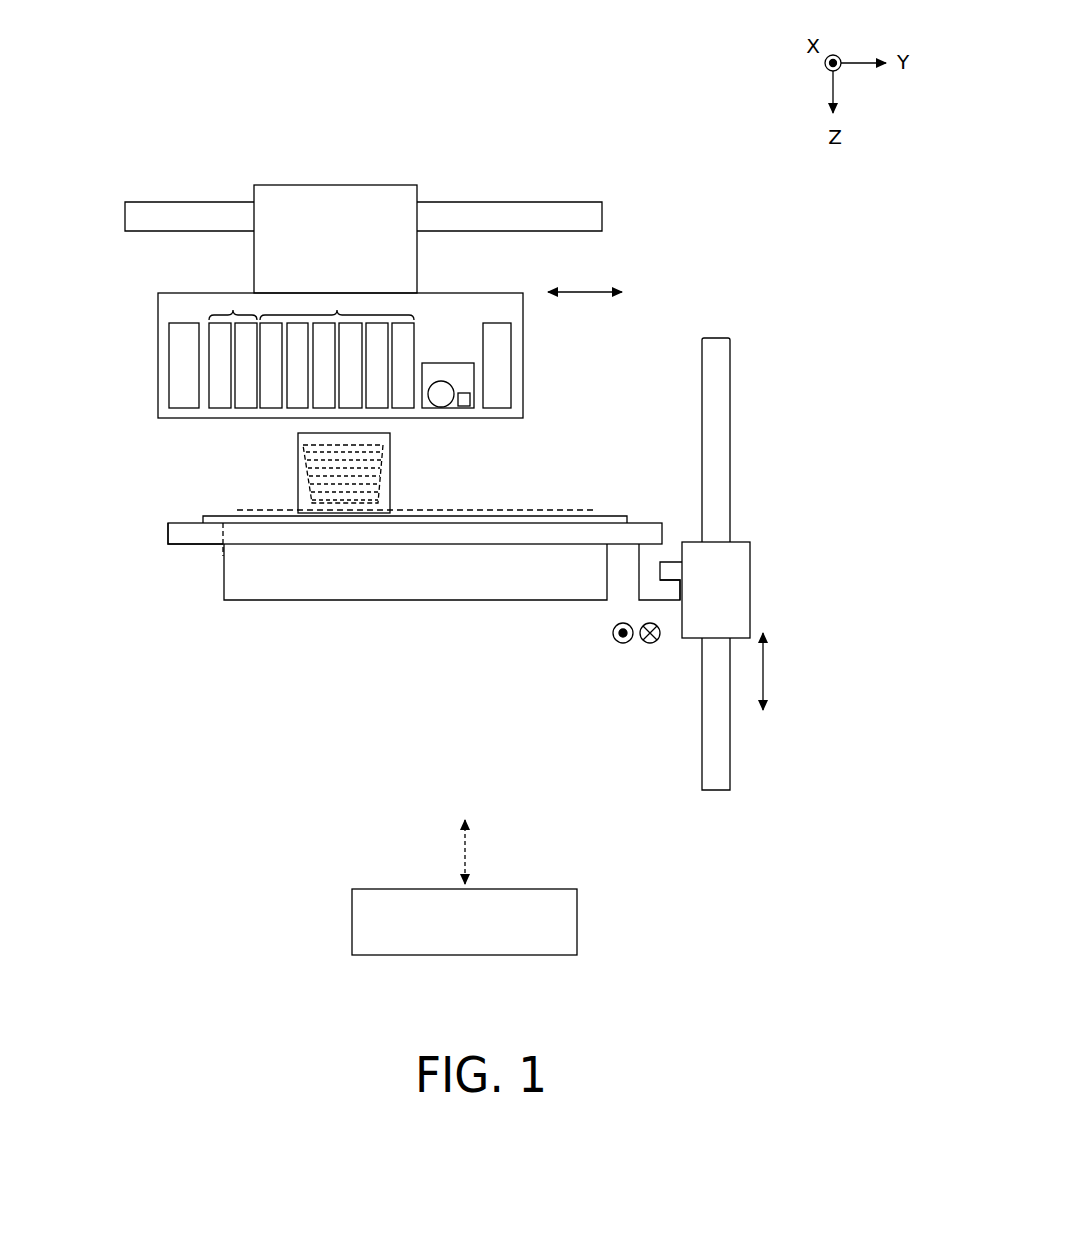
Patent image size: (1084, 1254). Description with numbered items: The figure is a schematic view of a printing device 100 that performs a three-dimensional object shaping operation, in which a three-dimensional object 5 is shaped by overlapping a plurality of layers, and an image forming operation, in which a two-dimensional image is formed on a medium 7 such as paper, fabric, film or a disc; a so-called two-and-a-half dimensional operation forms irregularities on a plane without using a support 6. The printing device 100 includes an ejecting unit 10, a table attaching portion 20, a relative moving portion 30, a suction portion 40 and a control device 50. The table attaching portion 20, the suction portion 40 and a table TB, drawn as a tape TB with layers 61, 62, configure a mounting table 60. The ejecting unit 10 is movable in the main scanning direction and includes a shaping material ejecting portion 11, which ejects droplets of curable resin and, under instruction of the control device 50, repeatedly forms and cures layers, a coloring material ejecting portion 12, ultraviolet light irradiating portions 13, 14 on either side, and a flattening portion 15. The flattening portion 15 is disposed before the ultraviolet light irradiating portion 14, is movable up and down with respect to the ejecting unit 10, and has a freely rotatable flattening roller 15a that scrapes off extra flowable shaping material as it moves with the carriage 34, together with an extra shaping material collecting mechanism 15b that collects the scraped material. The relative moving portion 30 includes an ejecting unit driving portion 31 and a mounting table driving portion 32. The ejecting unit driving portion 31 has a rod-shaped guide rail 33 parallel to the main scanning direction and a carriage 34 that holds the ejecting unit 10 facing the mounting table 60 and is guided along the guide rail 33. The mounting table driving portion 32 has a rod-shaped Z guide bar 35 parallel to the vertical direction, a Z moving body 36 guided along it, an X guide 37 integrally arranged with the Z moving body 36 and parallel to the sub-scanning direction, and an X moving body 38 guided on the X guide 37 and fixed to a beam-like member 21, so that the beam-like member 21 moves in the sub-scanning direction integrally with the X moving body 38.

The printing device 100 is at (678, 58).
The ejecting unit 10 is at (155, 313).
The shaping material ejecting portion 11 is at (233, 310).
The coloring material ejecting portion 12 is at (337, 310).
The ultraviolet light irradiating portion 13 is at (169, 365).
The ultraviolet light irradiating portion 14 is at (511, 372).
The flattening portion 15 is at (449, 360).
The flattening roller 15a is at (441, 408).
The extra shaping material collecting mechanism 15b is at (465, 407).
The three-dimensional object 5 is at (300, 463).
The support 6 is at (386, 505).
The medium 7 is at (513, 515).
The table attaching portion 20 is at (639, 516).
The beam-like member 21 is at (176, 540).
The relative moving portion 30 is at (655, 163).
The ejecting unit driving portion 31 is at (612, 215).
The mounting table driving portion 32 is at (717, 334).
The guide rail 33 is at (531, 201).
The carriage 34 is at (418, 262).
The Z guide bar 35 is at (726, 423).
The Z moving body 36 is at (742, 580).
The X guide 37 is at (672, 578).
The X moving body 38 is at (666, 546).
The suction portion 40 is at (353, 604).
The control device 50 is at (512, 889).
The mounting table 60 is at (538, 484).
The test body first layer 61 is at (456, 467).
The test body second layer 62 is at (612, 510).